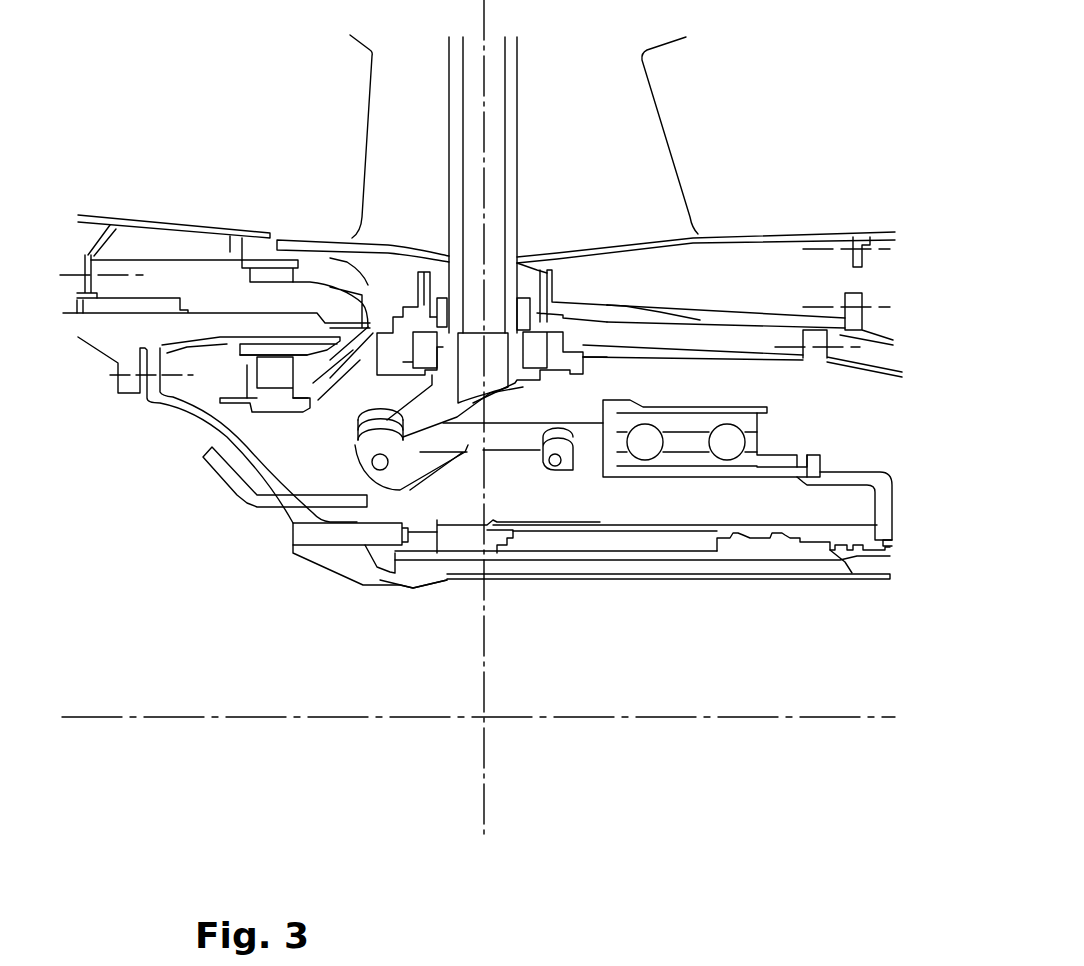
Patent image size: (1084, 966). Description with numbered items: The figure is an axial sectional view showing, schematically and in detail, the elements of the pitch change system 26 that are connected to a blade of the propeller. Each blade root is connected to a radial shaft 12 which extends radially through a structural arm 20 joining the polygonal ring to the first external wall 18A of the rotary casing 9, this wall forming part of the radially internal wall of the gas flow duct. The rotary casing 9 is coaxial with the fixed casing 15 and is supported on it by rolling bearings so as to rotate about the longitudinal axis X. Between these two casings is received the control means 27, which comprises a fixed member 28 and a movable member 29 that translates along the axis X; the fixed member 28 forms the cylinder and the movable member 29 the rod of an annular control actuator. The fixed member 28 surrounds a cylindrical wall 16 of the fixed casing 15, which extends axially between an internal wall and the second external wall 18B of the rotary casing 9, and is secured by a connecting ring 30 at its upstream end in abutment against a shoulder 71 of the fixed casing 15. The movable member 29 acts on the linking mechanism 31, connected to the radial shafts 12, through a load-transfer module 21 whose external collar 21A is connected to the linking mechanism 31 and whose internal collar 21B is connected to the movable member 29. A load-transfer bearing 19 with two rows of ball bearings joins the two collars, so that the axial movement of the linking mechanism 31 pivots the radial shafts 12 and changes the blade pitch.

The longitudinal axis X is at (116, 715).
The radial shaft 12 is at (512, 103).
The structural arm 20 is at (405, 168).
The first external wall 18A is at (882, 235).
The second external wall 18B is at (748, 318).
The rotary casing 9 is at (893, 325).
The annular external collar 21A is at (675, 410).
The internal collar 21B is at (733, 470).
The load-transfer module 21 is at (770, 440).
The load-transfer bearing 19 is at (690, 440).
The pitch change system 26 is at (660, 483).
The movable member 29 is at (680, 527).
The fixed member 28 is at (785, 543).
The fixed casing 15 is at (825, 583).
The control means 27 is at (890, 548).
The linking mechanism 31 is at (468, 478).
The shoulder 71 is at (350, 525).
The connecting ring 30 is at (378, 570).
The cylindrical wall 16 is at (385, 580).